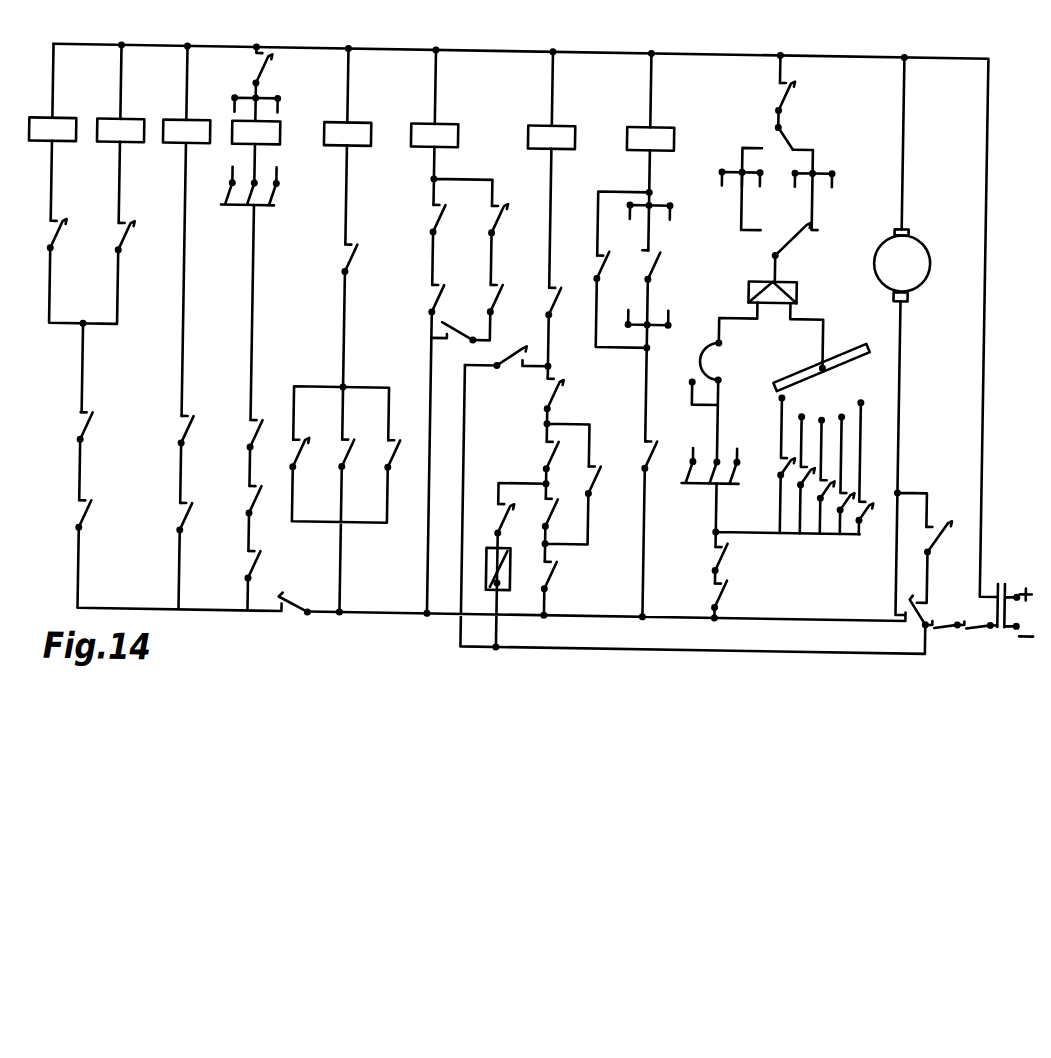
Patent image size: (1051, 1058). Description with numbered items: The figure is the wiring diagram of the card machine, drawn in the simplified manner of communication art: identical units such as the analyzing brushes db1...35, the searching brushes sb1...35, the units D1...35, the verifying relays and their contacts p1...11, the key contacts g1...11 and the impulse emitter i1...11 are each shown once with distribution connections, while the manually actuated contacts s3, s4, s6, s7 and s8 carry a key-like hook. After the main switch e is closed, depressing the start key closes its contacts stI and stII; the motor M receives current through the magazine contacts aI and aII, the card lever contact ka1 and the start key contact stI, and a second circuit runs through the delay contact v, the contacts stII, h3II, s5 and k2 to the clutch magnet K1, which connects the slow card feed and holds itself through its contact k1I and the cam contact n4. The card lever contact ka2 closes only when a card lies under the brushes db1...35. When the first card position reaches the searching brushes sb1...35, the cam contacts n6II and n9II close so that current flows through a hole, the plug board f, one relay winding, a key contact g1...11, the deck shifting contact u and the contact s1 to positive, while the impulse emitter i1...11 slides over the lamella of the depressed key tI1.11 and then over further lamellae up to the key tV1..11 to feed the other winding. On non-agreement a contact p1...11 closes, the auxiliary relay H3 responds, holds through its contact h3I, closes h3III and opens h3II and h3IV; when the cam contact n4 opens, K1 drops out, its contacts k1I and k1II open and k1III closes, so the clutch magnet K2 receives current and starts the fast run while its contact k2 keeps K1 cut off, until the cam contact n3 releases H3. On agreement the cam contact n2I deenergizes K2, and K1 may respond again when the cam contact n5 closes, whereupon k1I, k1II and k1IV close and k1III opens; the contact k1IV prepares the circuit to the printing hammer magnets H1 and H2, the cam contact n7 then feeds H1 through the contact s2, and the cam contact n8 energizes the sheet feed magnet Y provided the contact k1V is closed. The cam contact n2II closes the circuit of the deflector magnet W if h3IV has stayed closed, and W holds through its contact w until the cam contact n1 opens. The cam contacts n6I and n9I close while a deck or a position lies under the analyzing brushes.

The printing hammer magnet H1 is at (57, 92).
The printing hammer magnet H2 is at (124, 94).
The sheet feed magnet Y is at (187, 95).
The relays D D1...35 is at (284, 114).
The switch s8 is at (272, 67).
The analyzing brushes db1...35 is at (273, 198).
The clutch magnet K2 is at (351, 97).
The deflector magnet W is at (438, 99).
The clutch magnet K1 is at (559, 100).
The auxiliary relay H3 is at (663, 102).
The contact s2 is at (62, 235).
The switch s3 is at (133, 237).
The clutch magnet contact k1IV is at (96, 434).
The cam contact n7 is at (93, 518).
The clutch magnet contact k1V is at (195, 438).
The cam contact n8 is at (193, 520).
The cam contact n6I is at (262, 443).
The clutch magnet contact k1II is at (262, 511).
The cam contact n9I is at (261, 576).
The card lever contact ka2 is at (301, 597).
The clutch magnet contact k1III is at (361, 265).
The switch s6 is at (304, 457).
The auxiliary relay contact h3III is at (358, 463).
The cam contact n2I is at (402, 464).
The deflector magnet contact w is at (444, 222).
The switch s7 is at (506, 222).
The cam contact n1 is at (445, 301).
The auxiliary relay contact h3IV is at (506, 306).
The cam contact n2II is at (454, 346).
The switch s4 is at (506, 370).
The clutch magnet contact k2 is at (564, 300).
The contact s5 is at (562, 394).
The auxiliary relay contact h3II is at (560, 465).
The clutch magnet holding contact k1I is at (605, 490).
The cam contact n5 is at (559, 518).
The start key contact stII is at (512, 521).
The delay contact v is at (509, 569).
The cam contact n4 is at (559, 579).
The auxiliary relay holding contact h3I is at (612, 274).
The verifying relay contacts p1...11 is at (746, 267).
The cam contact n3 is at (658, 457).
The contact s1 is at (795, 93).
The deck shifting cam contact u is at (790, 127).
The key contacts g1...11 is at (780, 217).
The plug board f is at (706, 362).
The impulse emitter i1...11 is at (827, 370).
The searching brushes sb1...35 is at (733, 456).
The key tI1.11 is at (782, 462).
The key tV1..11 is at (864, 517).
The cam contact n9II is at (730, 566).
The cam contact n6II is at (730, 603).
The motor M is at (902, 265).
The start key contact stI is at (940, 545).
The card lever contact ka1 is at (937, 605).
The magazine contact aII is at (943, 640).
The magazine contact aI is at (975, 640).
The main switch e is at (1015, 600).